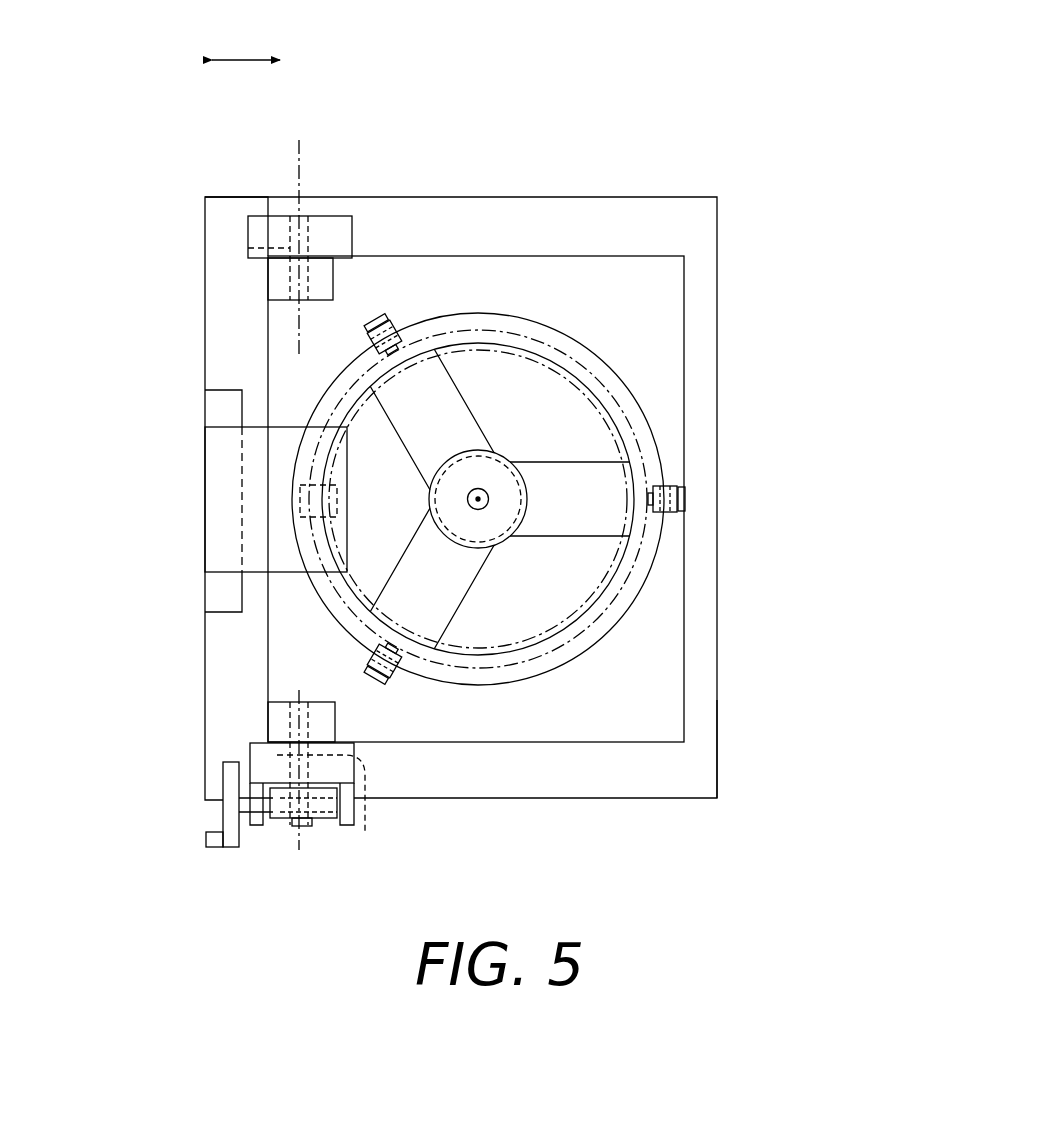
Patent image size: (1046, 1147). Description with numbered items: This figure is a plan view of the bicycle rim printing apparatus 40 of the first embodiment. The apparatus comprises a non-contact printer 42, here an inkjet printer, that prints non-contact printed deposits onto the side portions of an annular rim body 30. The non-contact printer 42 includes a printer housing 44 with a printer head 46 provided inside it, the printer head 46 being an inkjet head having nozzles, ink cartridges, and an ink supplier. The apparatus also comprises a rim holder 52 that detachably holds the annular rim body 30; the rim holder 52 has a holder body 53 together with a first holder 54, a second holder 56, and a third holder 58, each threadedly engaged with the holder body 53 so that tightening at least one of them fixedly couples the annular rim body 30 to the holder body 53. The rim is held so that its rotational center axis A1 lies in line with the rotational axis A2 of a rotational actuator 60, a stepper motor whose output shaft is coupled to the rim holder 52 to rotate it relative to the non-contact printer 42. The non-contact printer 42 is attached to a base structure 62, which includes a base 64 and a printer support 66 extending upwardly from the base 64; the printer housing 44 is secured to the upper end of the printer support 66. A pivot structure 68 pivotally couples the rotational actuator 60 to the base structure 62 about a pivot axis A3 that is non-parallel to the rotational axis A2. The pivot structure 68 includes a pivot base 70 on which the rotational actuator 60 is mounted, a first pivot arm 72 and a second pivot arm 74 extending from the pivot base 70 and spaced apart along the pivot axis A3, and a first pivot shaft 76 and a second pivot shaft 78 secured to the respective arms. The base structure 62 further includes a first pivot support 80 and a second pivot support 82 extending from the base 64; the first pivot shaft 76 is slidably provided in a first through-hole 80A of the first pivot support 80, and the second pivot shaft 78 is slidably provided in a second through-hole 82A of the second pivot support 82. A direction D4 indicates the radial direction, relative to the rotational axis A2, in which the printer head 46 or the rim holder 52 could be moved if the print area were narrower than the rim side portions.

The radial direction D4 is at (243, 60).
The bicycle rim printing apparatus 40 is at (700, 132).
The base structure 62 is at (722, 808).
The base 64 is at (700, 770).
The pivot base 70 is at (668, 298).
The pivot structure 68 is at (229, 222).
The second pivot support 82 is at (275, 240).
The second pivot arm 74 is at (278, 290).
The second through-hole 82A is at (310, 228).
The second pivot shaft 78 is at (250, 248).
The pivot axis A3 is at (300, 150).
The non-contact printer 42 is at (282, 424).
The printer housing 44 is at (222, 453).
The printer support 66 is at (222, 598).
The printer head 46 is at (320, 517).
The rim holder 52 is at (527, 318).
The holder body 53 is at (467, 313).
The rotational actuator 60 is at (590, 533).
The annular rim body 30 is at (626, 411).
The rotational center axis A1 is at (480, 497).
The rotational axis A2 is at (478, 510).
The first holder 54 is at (379, 318).
The second holder 56 is at (681, 495).
The third holder 58 is at (383, 690).
The first pivot arm 72 is at (278, 710).
The first pivot shaft 76 is at (278, 730).
The first pivot support 80 is at (278, 757).
The first through-hole 80A is at (329, 806).